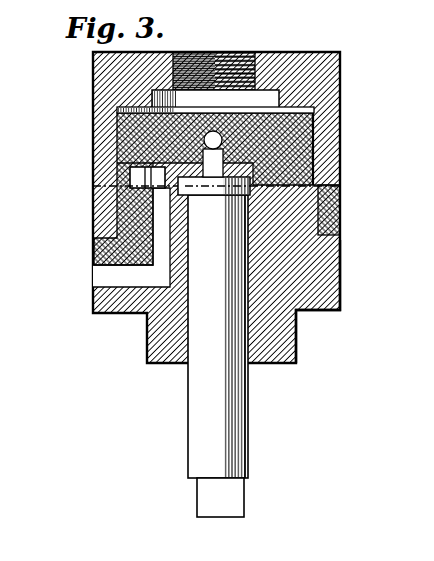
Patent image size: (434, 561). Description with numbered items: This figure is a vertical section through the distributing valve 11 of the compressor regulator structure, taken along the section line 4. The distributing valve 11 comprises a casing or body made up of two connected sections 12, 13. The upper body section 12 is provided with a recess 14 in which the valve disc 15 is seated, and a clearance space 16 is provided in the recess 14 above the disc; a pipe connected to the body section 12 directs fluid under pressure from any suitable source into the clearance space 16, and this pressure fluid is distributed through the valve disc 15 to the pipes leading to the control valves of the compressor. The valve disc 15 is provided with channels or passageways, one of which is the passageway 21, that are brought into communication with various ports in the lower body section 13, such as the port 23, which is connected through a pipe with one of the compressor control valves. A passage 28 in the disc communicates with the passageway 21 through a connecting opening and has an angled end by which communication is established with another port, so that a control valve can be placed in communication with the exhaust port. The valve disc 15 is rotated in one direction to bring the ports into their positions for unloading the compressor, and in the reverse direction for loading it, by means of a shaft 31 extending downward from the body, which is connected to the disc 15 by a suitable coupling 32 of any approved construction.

The section line 4- 4 is at (60, 186).
The distributing valve 11 is at (340, 243).
The body section 12 is at (327, 133).
The body section 13 is at (330, 288).
The recess 14 is at (313, 163).
The valve disc 15 is at (296, 125).
The clearance space 16 is at (313, 103).
The passageway 21 is at (160, 176).
The port 23 is at (158, 230).
The passage 28 is at (204, 136).
The shaft 31 is at (228, 397).
The coupling 32 is at (318, 208).